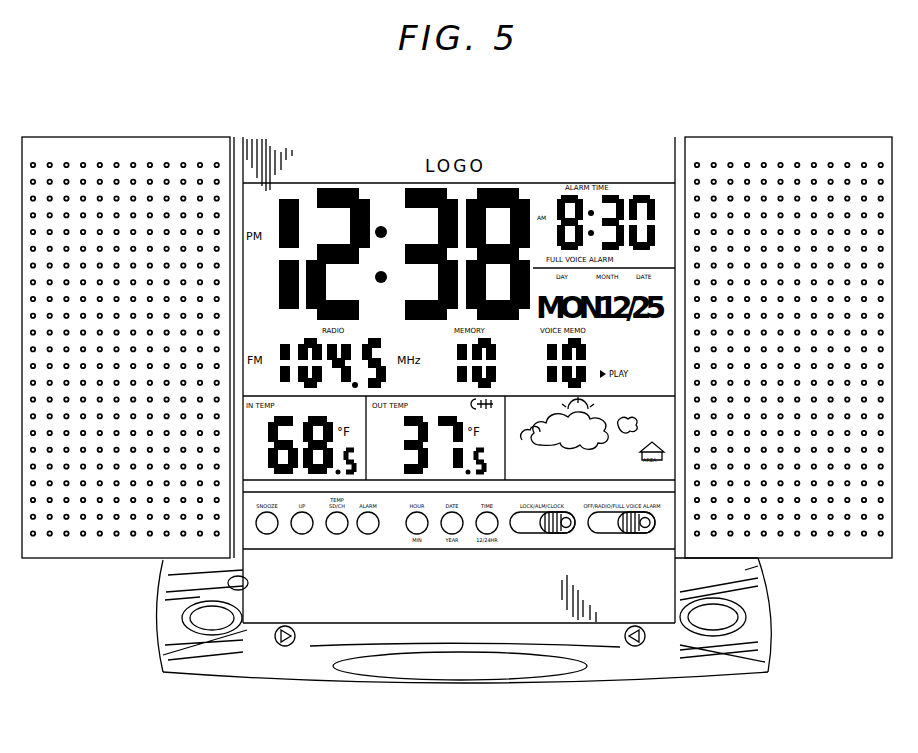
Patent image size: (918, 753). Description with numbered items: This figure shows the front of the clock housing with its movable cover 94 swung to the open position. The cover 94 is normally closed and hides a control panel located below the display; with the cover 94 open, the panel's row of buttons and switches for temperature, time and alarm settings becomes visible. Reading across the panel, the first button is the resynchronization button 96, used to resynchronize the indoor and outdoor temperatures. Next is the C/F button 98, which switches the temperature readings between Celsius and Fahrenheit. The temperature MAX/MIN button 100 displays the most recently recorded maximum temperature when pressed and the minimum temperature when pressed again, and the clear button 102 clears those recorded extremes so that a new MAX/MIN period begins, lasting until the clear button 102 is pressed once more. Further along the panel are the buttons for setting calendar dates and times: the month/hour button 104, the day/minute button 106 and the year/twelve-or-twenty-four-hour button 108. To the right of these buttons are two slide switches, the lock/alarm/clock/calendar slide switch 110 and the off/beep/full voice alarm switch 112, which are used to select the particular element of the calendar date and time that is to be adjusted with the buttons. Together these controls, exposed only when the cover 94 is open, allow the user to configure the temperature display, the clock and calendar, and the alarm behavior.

The cover 94 is at (263, 587).
The resynchronization button 96 is at (272, 535).
The C/F button 98 is at (306, 535).
The temperature MAX/MIN button 100 is at (342, 535).
The clear button 102 is at (372, 535).
The month/hour button 104 is at (425, 535).
The day/minute button 106 is at (458, 535).
The year/12/24-hour button 108 is at (493, 535).
The lock/alarm/clock/calendar slide switch 110 is at (573, 532).
The off/beep/full voice alarm switch 112 is at (655, 521).